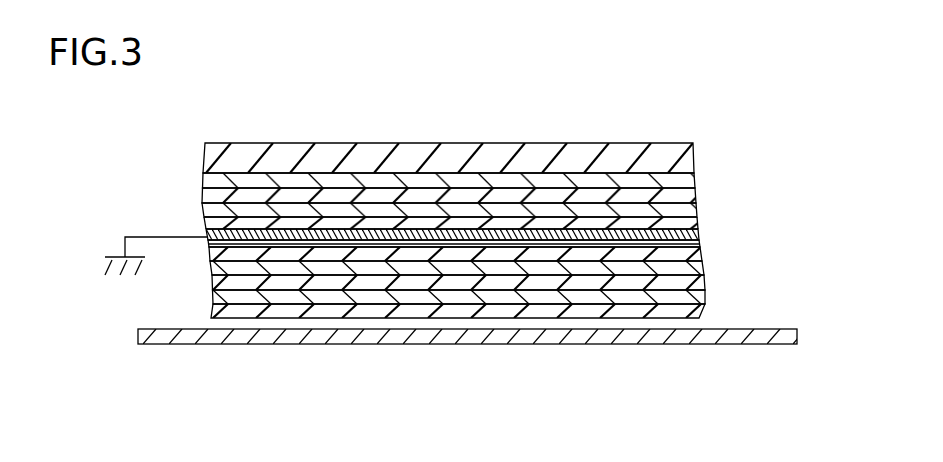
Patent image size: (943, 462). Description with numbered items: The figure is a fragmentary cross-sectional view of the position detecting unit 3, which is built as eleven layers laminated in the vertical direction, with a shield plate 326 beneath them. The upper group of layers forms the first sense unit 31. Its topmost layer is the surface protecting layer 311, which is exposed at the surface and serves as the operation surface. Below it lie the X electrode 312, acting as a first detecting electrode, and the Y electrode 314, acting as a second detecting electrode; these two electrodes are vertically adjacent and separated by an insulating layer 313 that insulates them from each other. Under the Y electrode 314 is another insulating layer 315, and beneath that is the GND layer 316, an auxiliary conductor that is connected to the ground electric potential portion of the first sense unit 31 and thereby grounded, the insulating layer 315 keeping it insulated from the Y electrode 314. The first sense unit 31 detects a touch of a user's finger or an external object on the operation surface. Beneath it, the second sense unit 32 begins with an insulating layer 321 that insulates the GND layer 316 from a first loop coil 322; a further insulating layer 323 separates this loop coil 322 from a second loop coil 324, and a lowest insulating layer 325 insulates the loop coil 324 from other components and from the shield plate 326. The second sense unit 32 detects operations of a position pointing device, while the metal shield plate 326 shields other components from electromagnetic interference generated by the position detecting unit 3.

The position detecting unit 3 is at (694, 114).
The first sense unit 31 is at (797, 115).
The surface protecting layer 311 is at (696, 158).
The X electrode 312 is at (695, 180).
The insulating layer 313 is at (696, 196).
The Y electrode 314 is at (697, 212).
The insulating layer 315 is at (698, 232).
The GND layer 316 is at (701, 245).
The second sense unit 32 is at (438, 401).
The insulating layer 321 is at (690, 257).
The loop coil 322 is at (643, 268).
The insulating layer 323 is at (582, 282).
The loop coil 324 is at (523, 297).
The insulating layer 325 is at (457, 308).
The shield plate 326 is at (213, 331).